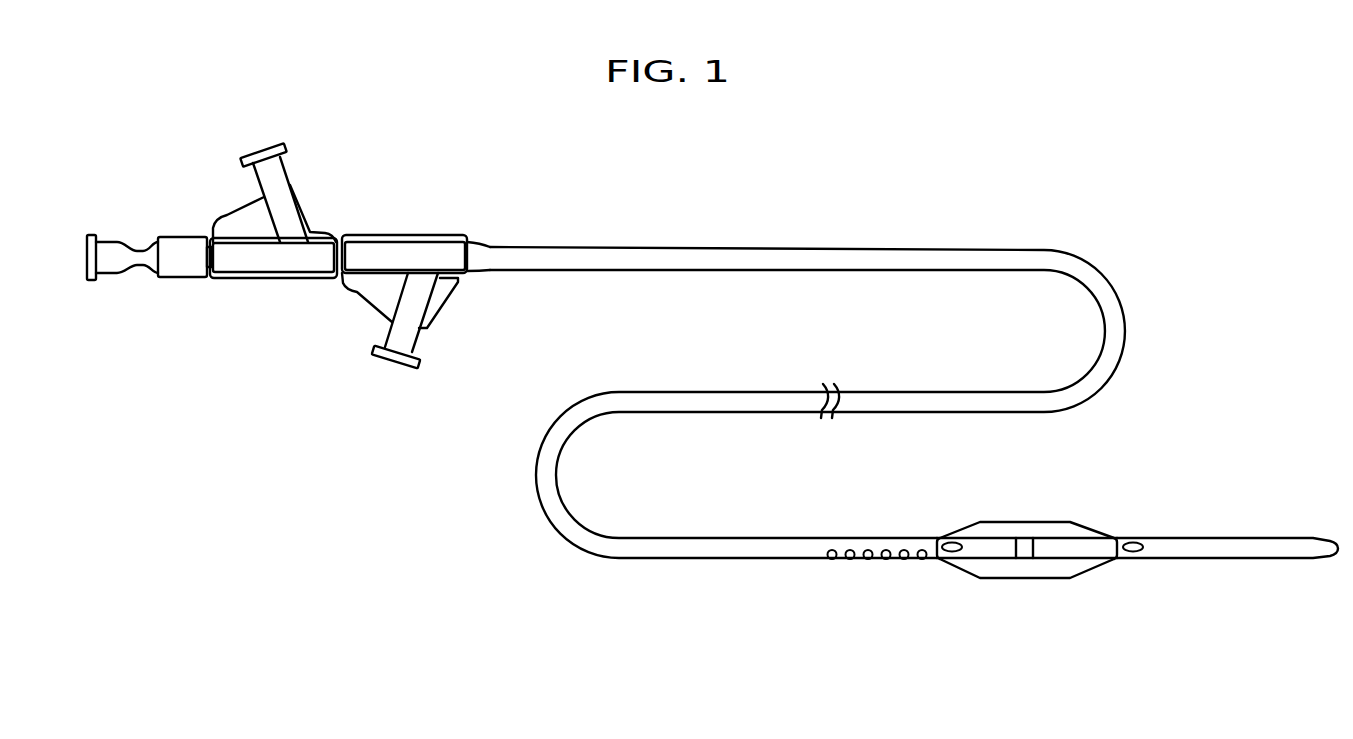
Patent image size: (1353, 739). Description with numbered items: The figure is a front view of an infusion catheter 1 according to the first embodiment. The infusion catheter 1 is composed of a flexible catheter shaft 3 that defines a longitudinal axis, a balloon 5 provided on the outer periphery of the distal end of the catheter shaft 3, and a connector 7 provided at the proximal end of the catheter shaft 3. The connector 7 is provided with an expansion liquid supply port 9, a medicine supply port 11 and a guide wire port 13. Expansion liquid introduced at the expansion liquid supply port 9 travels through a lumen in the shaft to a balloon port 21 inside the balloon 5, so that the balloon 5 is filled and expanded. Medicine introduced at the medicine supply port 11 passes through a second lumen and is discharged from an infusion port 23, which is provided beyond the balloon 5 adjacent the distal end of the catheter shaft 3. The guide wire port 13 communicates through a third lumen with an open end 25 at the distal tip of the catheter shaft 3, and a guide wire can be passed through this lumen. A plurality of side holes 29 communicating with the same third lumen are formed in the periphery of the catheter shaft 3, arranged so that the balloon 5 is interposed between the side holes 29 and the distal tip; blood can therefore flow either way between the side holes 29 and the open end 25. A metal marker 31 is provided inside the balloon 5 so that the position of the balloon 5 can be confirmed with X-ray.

The infusion catheter 1 is at (789, 194).
The catheter shaft 3 is at (1035, 260).
The balloon 5 is at (1055, 530).
The connector 7 is at (290, 260).
The expansion liquid supply port 9 is at (405, 342).
The medicine supply port 11 is at (277, 175).
The guide wire port 13 is at (120, 260).
The balloon port 21 is at (955, 540).
The infusion port 23 is at (1132, 542).
The open end 25 is at (1340, 550).
The side holes 29 is at (833, 562).
The metal marker 31 is at (1027, 547).